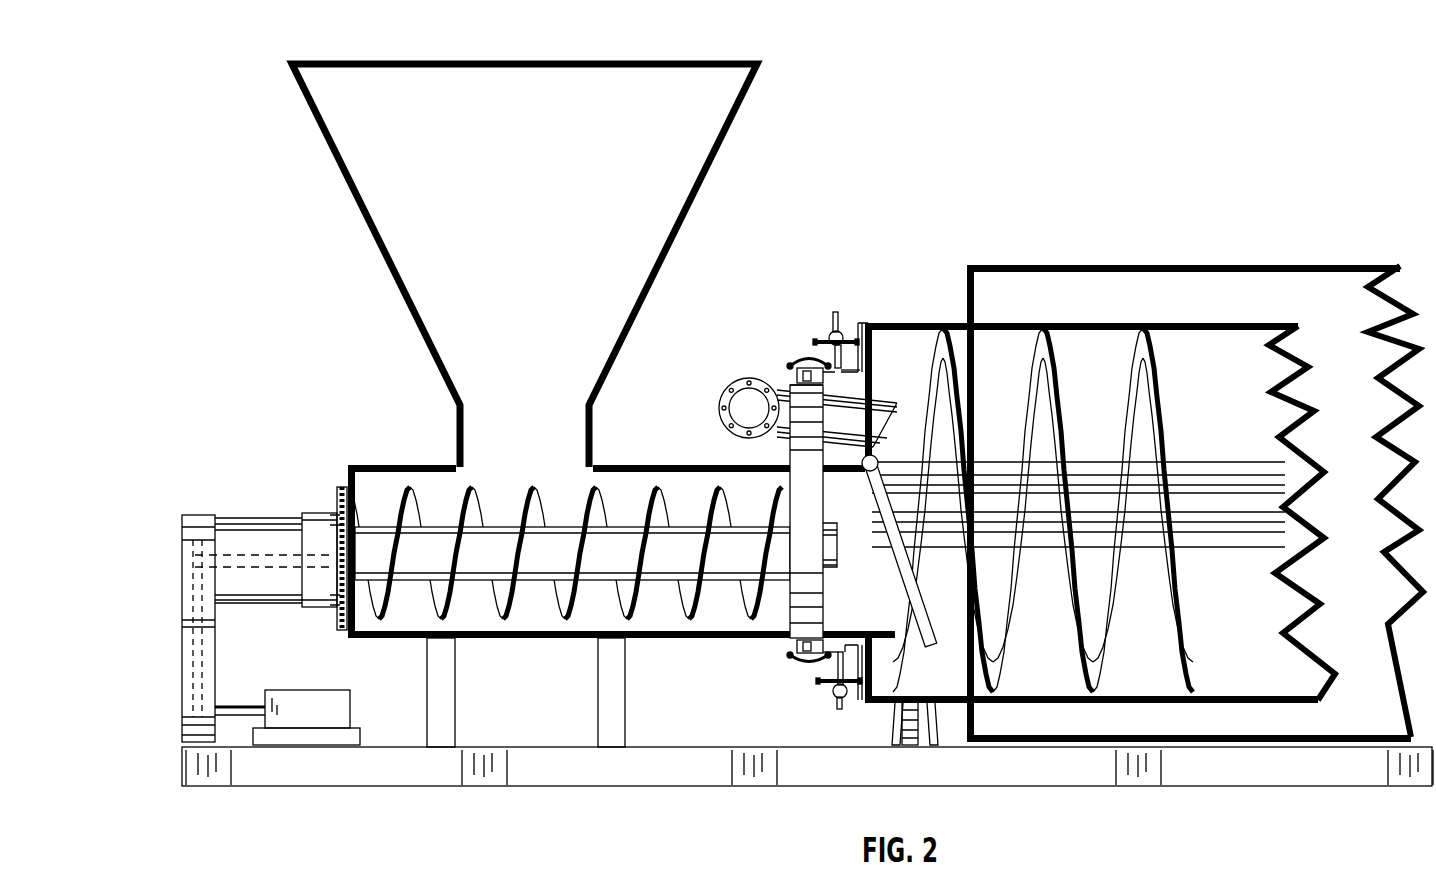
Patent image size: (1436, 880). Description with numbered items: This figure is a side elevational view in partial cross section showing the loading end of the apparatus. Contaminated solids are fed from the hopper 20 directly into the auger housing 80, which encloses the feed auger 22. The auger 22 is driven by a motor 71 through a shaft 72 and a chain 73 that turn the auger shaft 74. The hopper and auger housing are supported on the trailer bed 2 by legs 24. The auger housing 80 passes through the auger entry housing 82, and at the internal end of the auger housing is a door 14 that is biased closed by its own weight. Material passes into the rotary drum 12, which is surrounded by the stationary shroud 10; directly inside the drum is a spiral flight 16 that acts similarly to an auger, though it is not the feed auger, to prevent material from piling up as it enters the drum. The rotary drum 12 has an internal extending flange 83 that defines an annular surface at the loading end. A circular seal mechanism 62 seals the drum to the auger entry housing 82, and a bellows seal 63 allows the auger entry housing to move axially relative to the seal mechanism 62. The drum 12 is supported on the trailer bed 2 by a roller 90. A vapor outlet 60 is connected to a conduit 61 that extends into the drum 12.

The trailer bed 2 is at (748, 790).
The stationary shroud 10 is at (1190, 266).
The rotary drum 12 is at (1192, 324).
The door 14 is at (880, 548).
The spiral flight 16 is at (1158, 362).
The hopper 20 is at (366, 220).
The auger 22 is at (546, 470).
The legs 24 is at (598, 665).
The vapor outlet 60 is at (745, 380).
The conduit 61 is at (893, 404).
The circular seal mechanism 62 is at (821, 309).
The bellows seal 63 is at (805, 349).
The motor 71 is at (322, 690).
The shaft 72 is at (250, 705).
The chain 73 is at (205, 633).
The auger shaft 74 is at (245, 550).
The auger housing 80 is at (420, 462).
The auger entry housing 82 is at (790, 455).
The internal extending flange 83 is at (859, 325).
The roller 90 is at (922, 735).